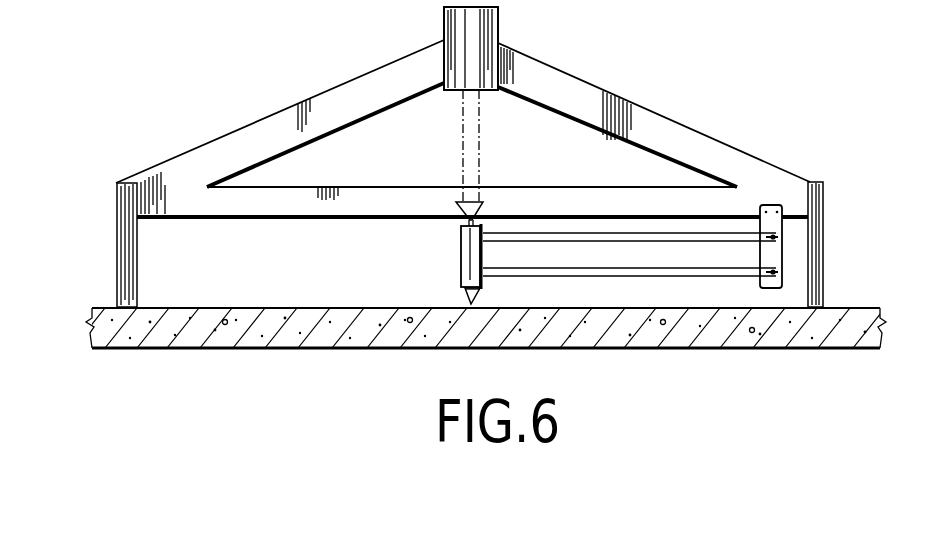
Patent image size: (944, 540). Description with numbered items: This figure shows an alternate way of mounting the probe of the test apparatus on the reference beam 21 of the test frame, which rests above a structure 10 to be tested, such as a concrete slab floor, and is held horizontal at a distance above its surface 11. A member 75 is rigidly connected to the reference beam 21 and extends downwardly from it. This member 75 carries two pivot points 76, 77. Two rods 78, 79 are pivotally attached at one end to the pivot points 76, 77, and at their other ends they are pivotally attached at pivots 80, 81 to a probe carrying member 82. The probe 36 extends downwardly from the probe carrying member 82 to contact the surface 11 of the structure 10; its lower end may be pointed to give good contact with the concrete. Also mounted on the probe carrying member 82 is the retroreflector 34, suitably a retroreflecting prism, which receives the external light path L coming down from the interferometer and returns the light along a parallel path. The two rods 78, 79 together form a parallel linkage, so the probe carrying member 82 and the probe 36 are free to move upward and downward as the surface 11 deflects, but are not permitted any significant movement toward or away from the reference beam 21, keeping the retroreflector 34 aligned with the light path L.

The structure to be tested 10 is at (252, 340).
The surface 11 is at (282, 307).
The reference beam 21 is at (684, 198).
The retroreflector 34 is at (460, 215).
The probe 36 is at (468, 295).
The member 75 is at (771, 207).
The pivot point 76 is at (783, 239).
The pivot point 77 is at (783, 276).
The rod 78 is at (686, 241).
The rod 79 is at (614, 277).
The pivot 80 is at (483, 222).
The pivot 81 is at (480, 290).
The probe carrying member 82 is at (460, 250).
The external light path L is at (483, 152).